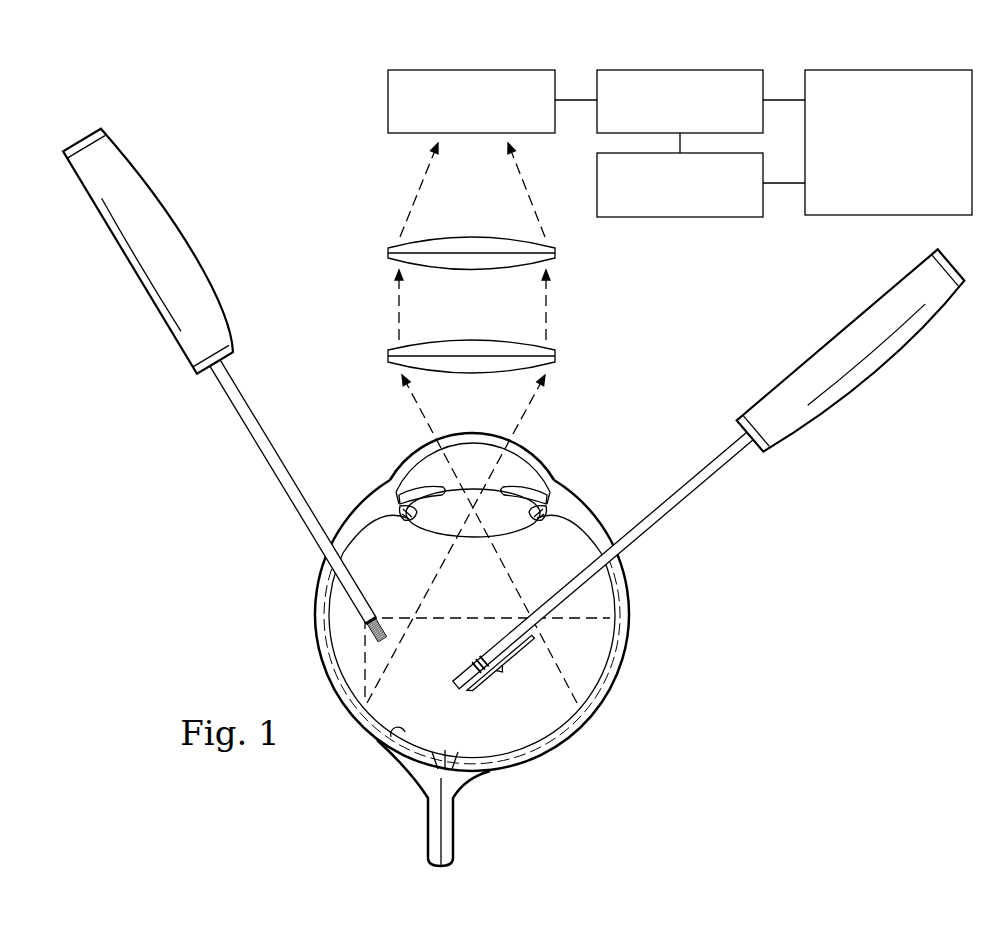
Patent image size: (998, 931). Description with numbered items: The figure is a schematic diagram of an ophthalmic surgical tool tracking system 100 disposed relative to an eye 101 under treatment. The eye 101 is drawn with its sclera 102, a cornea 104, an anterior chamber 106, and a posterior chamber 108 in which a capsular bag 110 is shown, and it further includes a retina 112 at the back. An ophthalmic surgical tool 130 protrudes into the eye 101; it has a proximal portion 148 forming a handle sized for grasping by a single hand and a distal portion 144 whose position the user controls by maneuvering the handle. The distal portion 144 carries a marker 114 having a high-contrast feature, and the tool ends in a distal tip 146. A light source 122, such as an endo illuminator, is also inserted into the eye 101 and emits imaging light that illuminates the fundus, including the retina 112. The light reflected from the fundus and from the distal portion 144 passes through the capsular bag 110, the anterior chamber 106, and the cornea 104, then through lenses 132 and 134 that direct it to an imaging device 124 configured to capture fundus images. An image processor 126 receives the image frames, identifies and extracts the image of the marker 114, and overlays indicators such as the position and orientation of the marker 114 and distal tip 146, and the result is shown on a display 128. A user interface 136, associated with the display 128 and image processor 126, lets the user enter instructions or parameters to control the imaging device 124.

The ophthalmic surgical tool tracking system 100 is at (263, 110).
The eye 101 is at (490, 633).
The sclera 102 is at (605, 688).
The cornea 104 is at (537, 453).
The anterior chamber 106 is at (532, 478).
The posterior chamber 108 is at (428, 535).
The capsular bag 110 is at (512, 533).
The retina 112 is at (388, 740).
The marker 114 is at (482, 658).
The light source 122 is at (157, 340).
The imaging device 124 is at (463, 69).
The image processor 126 is at (705, 69).
The display 128 is at (702, 218).
The ophthalmic surgical tool 130 is at (686, 493).
The lens 132 is at (466, 339).
The lens 134 is at (466, 236).
The user interface 136 is at (903, 69).
The distal portion 144 is at (503, 670).
The distal tip 146 is at (455, 672).
The proximal portion 148 is at (872, 378).